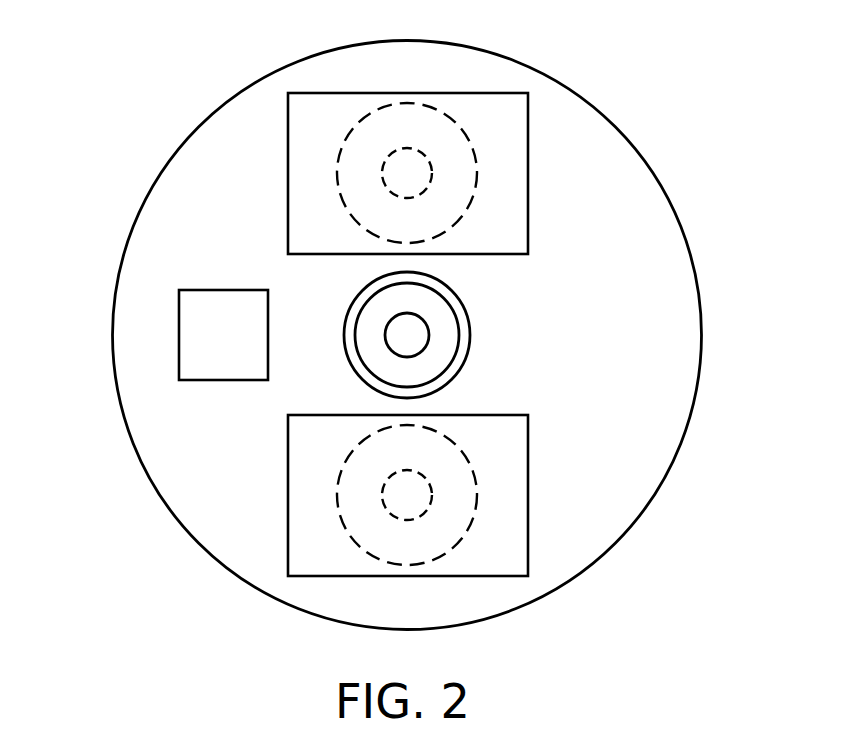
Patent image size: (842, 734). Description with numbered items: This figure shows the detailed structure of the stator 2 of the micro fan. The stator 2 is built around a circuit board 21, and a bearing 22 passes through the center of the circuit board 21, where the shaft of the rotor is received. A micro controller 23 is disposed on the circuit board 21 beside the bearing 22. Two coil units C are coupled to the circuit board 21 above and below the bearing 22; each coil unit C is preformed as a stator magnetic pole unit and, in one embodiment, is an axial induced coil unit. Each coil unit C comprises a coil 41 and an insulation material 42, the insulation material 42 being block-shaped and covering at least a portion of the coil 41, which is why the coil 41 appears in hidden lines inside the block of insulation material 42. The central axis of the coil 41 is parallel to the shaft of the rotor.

The stator 2 is at (647, 103).
The circuit board 21 is at (683, 279).
The bearing 22 is at (448, 334).
The micro controller 23 is at (197, 336).
The coil 41 is at (338, 167).
The insulation material 42 is at (305, 216).
The coil unit C is at (452, 178).